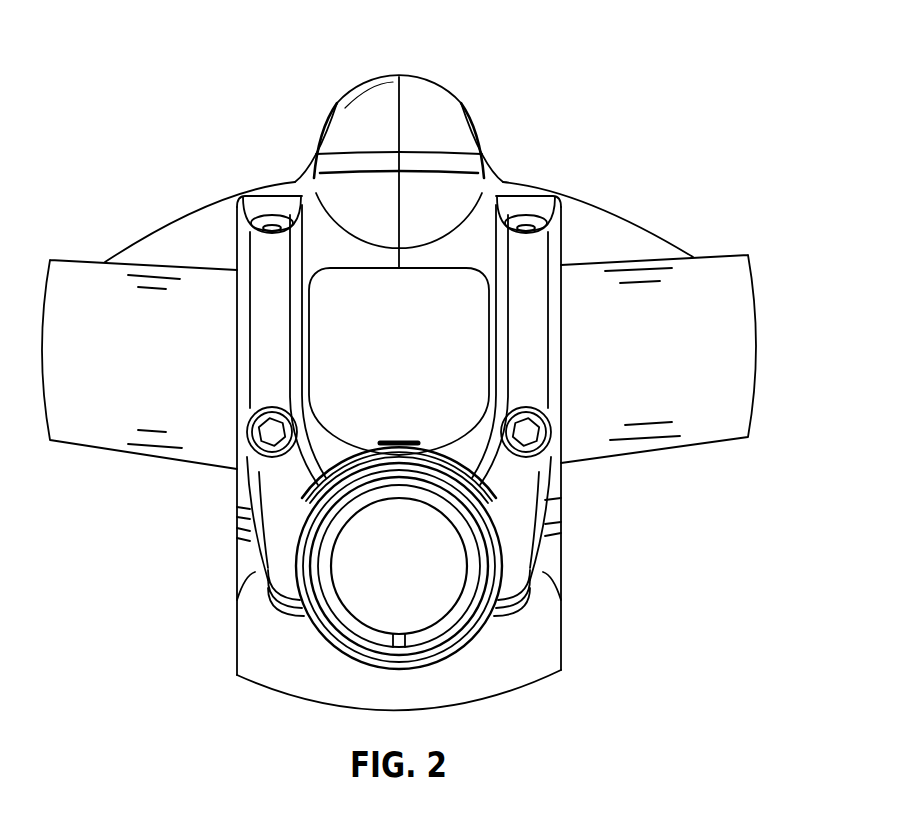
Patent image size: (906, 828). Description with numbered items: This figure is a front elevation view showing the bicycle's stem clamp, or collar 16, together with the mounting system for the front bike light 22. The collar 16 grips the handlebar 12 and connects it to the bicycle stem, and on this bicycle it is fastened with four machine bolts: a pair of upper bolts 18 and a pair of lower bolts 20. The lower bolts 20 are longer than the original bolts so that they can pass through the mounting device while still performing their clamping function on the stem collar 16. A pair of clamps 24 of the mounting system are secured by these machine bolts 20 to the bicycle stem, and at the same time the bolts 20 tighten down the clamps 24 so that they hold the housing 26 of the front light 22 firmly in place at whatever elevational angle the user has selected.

The handlebar 12 is at (673, 297).
The collar 16 is at (522, 277).
The upper bolts 18 is at (273, 222).
The lower bolts 20 is at (247, 458).
The front light 22 is at (467, 650).
The clamps 24 is at (290, 520).
The housing 26 is at (497, 568).